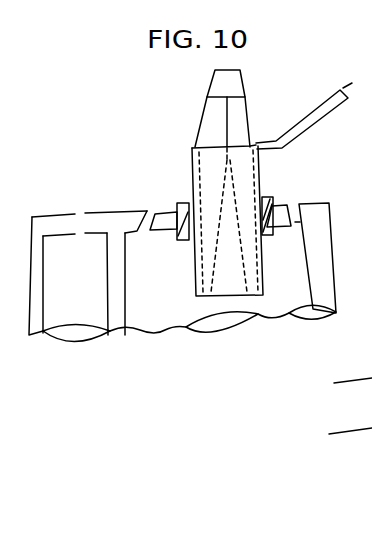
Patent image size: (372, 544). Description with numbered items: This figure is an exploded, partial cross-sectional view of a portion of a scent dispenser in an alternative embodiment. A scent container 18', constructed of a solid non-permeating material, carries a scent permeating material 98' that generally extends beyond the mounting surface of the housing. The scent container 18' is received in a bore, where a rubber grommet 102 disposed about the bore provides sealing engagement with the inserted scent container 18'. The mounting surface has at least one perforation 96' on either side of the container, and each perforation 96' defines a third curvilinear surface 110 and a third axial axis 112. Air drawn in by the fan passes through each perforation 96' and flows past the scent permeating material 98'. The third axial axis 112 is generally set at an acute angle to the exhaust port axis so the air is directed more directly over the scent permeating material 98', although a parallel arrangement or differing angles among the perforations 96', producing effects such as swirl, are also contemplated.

The third axial axis 112 is at (63, 292).
The perforation 96' is at (211, 185).
The scent container 18' is at (205, 214).
The scent permeating material 98' is at (272, 96).
The rubber grommet 102 is at (188, 206).
The third curvilinear surface 110 is at (96, 192).